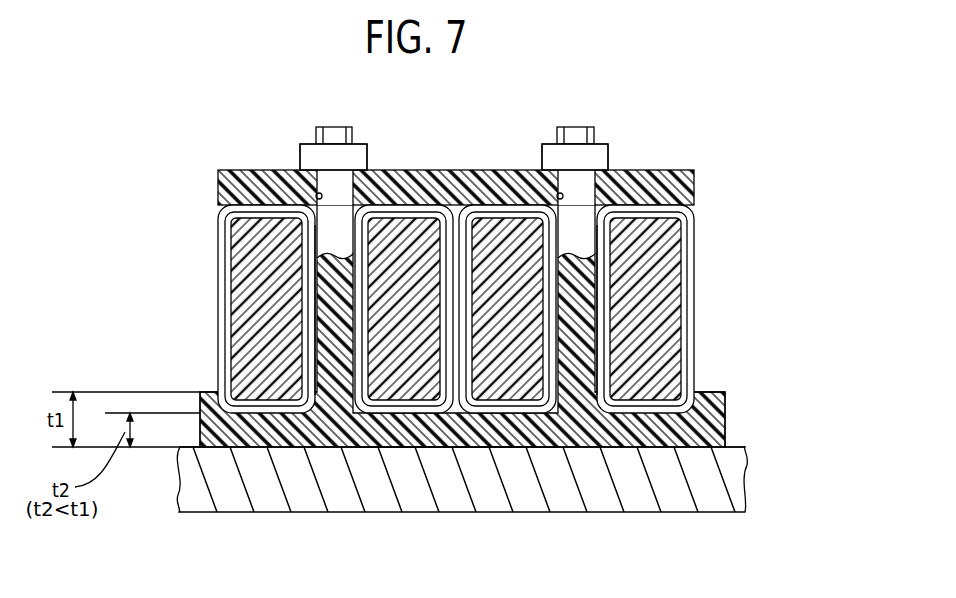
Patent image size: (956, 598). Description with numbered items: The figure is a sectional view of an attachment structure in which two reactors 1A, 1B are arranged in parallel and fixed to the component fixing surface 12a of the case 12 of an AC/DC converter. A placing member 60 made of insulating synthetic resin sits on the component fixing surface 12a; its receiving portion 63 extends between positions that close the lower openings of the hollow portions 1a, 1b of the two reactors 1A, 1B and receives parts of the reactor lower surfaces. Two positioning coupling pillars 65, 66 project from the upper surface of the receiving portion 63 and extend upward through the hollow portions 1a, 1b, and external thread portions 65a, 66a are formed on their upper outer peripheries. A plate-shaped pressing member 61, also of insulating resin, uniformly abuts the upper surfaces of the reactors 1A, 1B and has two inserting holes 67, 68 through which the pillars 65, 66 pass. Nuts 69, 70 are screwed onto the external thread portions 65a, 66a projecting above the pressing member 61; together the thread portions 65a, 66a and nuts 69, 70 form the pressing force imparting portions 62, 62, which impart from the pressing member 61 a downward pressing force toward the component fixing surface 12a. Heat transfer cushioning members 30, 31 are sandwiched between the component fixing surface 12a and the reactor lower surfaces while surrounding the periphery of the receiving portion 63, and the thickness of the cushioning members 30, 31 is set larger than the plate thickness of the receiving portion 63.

The reactor 1A is at (218, 270).
The hollow portion 1a is at (322, 337).
The reactor 1B is at (695, 270).
The hollow portion 1b is at (590, 333).
The case 12 is at (720, 475).
The component fixing surface 12a is at (733, 446).
The heat transfer cushioning member 30 is at (247, 438).
The heat transfer cushioning member 31 is at (668, 438).
The placing member 60 is at (482, 446).
The pressing member 61 is at (676, 171).
The pressing force imparting portion 62 is at (299, 151).
The receiving portion 63 is at (407, 438).
The positioning coupling pillar 65 is at (333, 131).
The external thread portion 65a is at (350, 138).
The positioning coupling pillar 66 is at (575, 131).
The external thread portion 66a is at (592, 138).
The inserting hole 67 is at (317, 197).
The inserting hole 68 is at (558, 197).
The nut 69 is at (312, 158).
The nut 70 is at (553, 158).